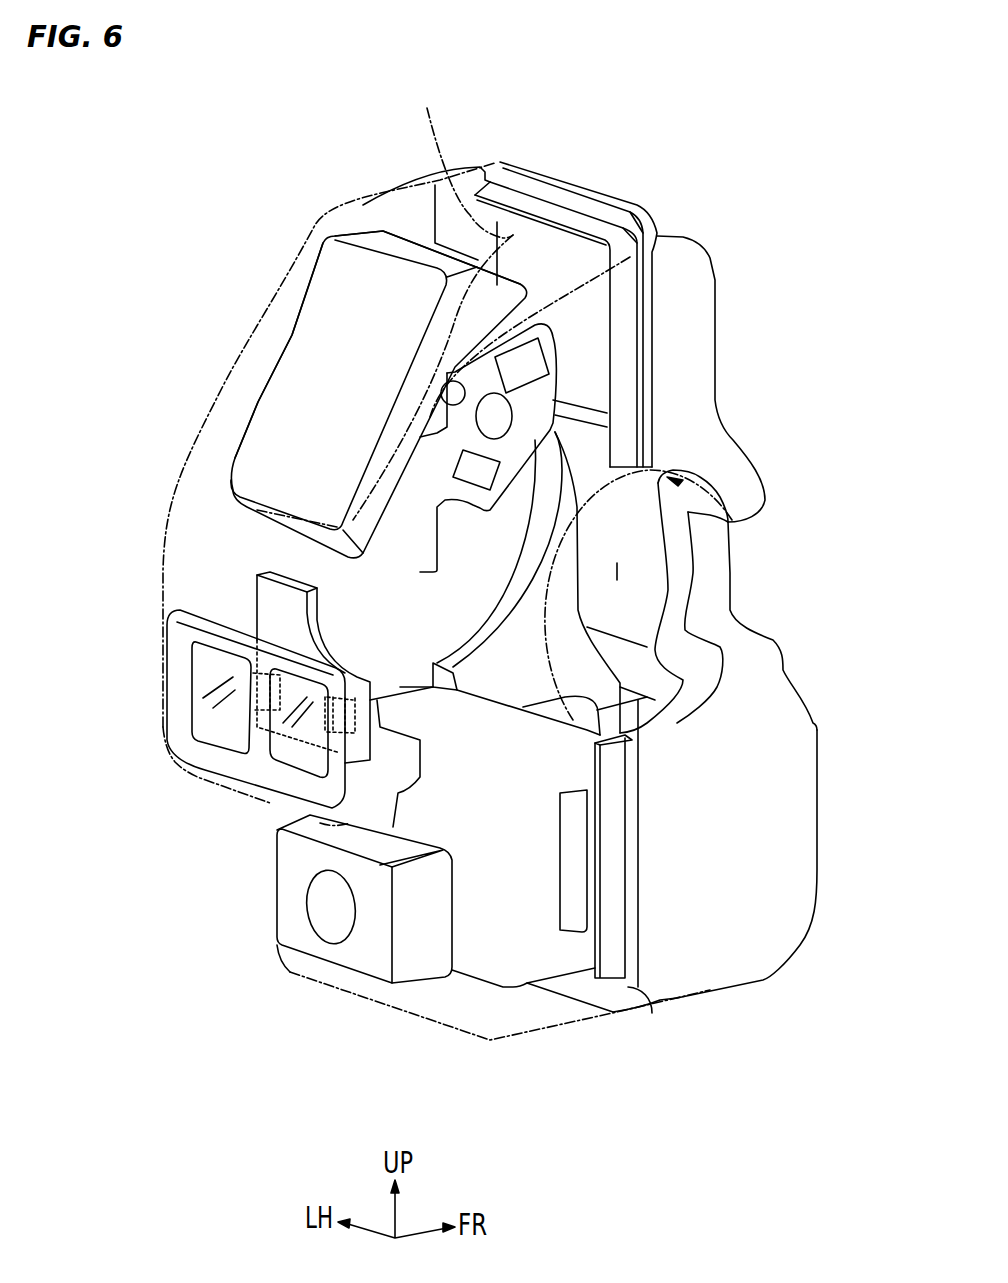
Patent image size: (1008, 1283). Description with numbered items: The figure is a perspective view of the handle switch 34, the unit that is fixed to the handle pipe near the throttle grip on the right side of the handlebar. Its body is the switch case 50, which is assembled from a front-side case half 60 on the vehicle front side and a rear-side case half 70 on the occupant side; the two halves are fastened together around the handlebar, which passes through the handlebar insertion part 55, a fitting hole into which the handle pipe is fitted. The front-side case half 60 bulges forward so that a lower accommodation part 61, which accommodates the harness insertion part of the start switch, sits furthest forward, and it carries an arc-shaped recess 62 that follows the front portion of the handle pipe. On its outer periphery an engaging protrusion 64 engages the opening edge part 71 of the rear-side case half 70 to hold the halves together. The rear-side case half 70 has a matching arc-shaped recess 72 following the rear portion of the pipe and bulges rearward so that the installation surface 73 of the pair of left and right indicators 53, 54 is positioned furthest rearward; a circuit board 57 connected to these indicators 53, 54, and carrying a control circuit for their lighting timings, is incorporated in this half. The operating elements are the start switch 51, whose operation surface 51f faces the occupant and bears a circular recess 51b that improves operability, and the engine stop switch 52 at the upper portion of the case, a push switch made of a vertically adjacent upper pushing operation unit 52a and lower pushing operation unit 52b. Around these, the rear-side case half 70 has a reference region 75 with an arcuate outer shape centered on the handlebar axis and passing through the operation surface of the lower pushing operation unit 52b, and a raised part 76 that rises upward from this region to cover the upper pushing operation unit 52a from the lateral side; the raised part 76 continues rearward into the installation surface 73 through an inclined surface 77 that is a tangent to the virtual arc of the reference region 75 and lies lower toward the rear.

The handle switch 34 is at (150, 200).
The switch case 50 is at (680, 225).
The start switch 51 is at (318, 941).
The circular recess 51b is at (320, 900).
The operation surface 51f is at (317, 950).
The engine stop switch 52 is at (275, 368).
The upper pushing operation unit 52a is at (340, 273).
The lower pushing operation unit 52b is at (248, 462).
The indicator 53 is at (203, 723).
The indicator 54 is at (293, 757).
The handlebar insertion part 55 is at (640, 577).
The circuit board 57 is at (263, 595).
The front-side case half 60 is at (755, 450).
The lower accommodation part 61 is at (817, 853).
The arc-shaped recess 62 is at (680, 593).
The engaging protrusion 64 is at (622, 370).
The rear-side case half 70 is at (168, 525).
The opening edge part 71 is at (652, 1013).
The arc-shaped recess 72 is at (587, 507).
The installation surface 73 is at (200, 753).
The reference region 75 is at (578, 322).
The raised part 76 is at (433, 301).
The inclined surface 77 is at (376, 456).